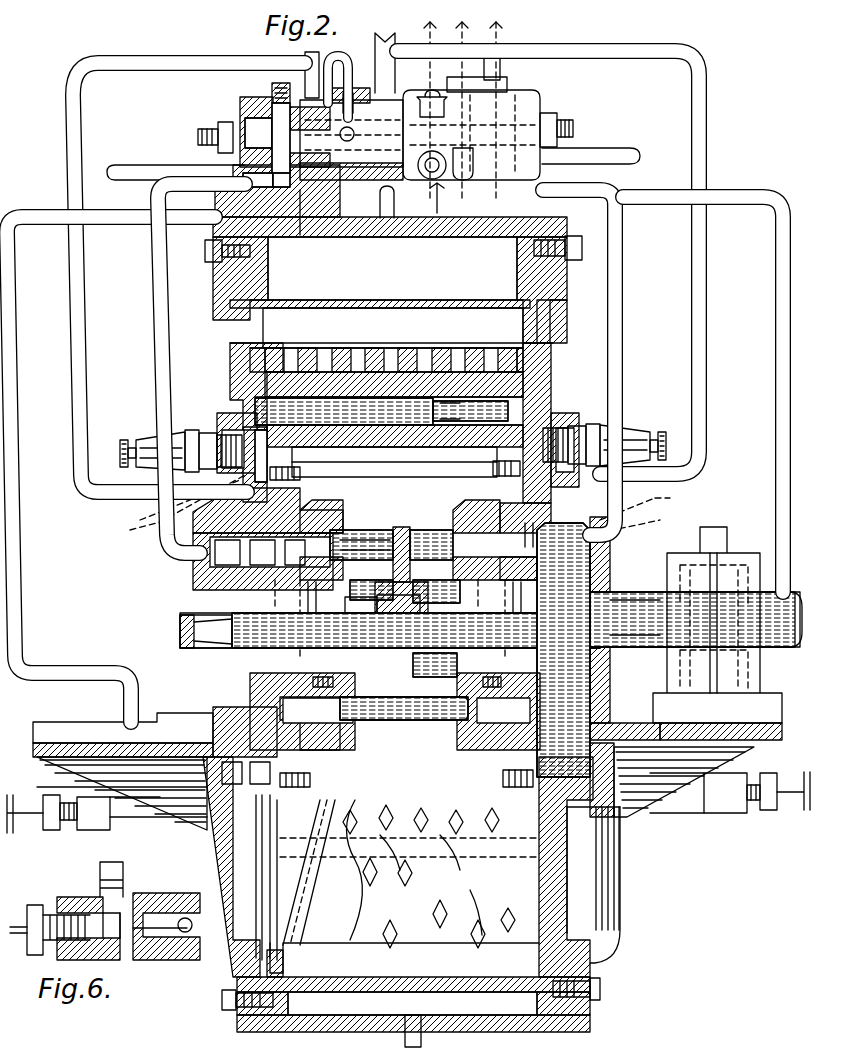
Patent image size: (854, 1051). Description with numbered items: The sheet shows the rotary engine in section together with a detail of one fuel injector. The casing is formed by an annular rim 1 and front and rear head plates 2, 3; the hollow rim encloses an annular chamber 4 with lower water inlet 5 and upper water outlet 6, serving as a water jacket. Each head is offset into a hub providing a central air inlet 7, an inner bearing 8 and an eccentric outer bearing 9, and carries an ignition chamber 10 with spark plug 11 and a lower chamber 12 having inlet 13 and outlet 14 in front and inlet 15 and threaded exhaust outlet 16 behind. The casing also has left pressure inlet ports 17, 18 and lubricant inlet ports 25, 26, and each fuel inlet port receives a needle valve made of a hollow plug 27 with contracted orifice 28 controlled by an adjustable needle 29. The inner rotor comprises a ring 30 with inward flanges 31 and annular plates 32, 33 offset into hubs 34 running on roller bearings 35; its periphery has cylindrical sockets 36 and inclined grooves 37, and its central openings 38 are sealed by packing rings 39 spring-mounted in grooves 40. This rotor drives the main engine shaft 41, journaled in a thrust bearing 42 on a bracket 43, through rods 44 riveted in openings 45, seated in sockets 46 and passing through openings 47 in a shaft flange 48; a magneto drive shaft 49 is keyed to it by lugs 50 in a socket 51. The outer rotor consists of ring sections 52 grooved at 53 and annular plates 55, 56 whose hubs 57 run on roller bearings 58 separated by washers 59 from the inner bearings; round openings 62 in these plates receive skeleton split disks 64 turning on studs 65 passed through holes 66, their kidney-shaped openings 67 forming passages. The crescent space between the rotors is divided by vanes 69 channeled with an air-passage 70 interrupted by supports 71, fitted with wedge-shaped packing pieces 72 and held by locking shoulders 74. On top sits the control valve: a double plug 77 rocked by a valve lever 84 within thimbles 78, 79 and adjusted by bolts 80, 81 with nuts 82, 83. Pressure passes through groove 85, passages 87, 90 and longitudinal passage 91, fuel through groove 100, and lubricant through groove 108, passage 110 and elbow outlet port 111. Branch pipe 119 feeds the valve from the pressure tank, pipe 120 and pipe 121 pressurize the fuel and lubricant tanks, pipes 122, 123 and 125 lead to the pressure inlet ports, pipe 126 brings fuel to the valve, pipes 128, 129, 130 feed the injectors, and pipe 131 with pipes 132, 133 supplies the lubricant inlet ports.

In FIG. 2, the annular rim 1 is at (252, 262).
In FIG. 2, the front head plate 2 is at (235, 358).
In FIG. 2, the rear head plate 3 is at (553, 350).
In FIG. 2, the annular chamber 4 is at (484, 1032).
In FIG. 2, the lower water inlet 5 is at (423, 525).
In FIG. 2, the upper water outlet 6 is at (380, 200).
In FIG. 2, the central air inlet 7 is at (602, 590).
In FIG. 2, the inner bearing 8 is at (262, 672).
In FIG. 2, the outer bearing 9 is at (235, 738).
In FIG. 2, the ignition chamber 10 is at (240, 420).
In FIG. 2, the spark plug 11 is at (150, 440).
In FIG. 2, the chamber 12 is at (238, 890).
In FIG. 2, the inlet 13 is at (225, 988).
In FIG. 2, the outlet 14 is at (262, 880).
In FIG. 2, the inlet 15 is at (560, 860).
In FIG. 2, the outlet 16 is at (600, 910).
In FIG. 2, the left pressure inlet port 17 is at (185, 504).
In FIG. 2, the left pressure inlet port 18 is at (637, 504).
In FIG. 2, the lubricant inlet port 25 is at (196, 576).
In FIG. 2, the lubricant inlet port 26 is at (612, 548).
In FIG. 2, the hollow plug 27 is at (108, 808).
In FIG. 6, the hollow plug 27 is at (145, 958).
In FIG. 6, the contracted orifice 28 is at (199, 945).
In FIG. 2, the adjustable needle 29 is at (36, 805).
In FIG. 6, the adjustable needle 29 is at (15, 927).
In FIG. 2, the ring 30 is at (420, 426).
In FIG. 2, the integral flanges 31 is at (395, 451).
In FIG. 2, the annular plate 32 is at (290, 506).
In FIG. 2, the annular plate 33 is at (530, 515).
In FIG. 2, the hubs 34 is at (352, 515).
In FIG. 2, the roller bearings 35 is at (380, 530).
In FIG. 2, the transverse cylindrical sockets 36 is at (320, 783).
In FIG. 2, the radial round-bottomed grooves 37 is at (288, 350).
In FIG. 2, the central openings 38 is at (390, 620).
In FIG. 2, the packing rings 39 is at (404, 670).
In FIG. 2, the grooves 40 is at (417, 567).
In FIG. 2, the main engine shaft 41 is at (657, 640).
In FIG. 2, the thrust bearing 42 is at (727, 562).
In FIG. 2, the bracket 43 is at (782, 735).
In FIG. 2, the rods 44 is at (378, 540).
In FIG. 2, the openings 45 is at (408, 565).
In FIG. 2, the sockets 46 is at (350, 565).
In FIG. 2, the openings 47 is at (410, 690).
In FIG. 2, the flange 48 is at (410, 563).
In FIG. 2, the magneto drive shaft 49 is at (180, 631).
In FIG. 2, the lugs 50 is at (377, 622).
In FIG. 2, the socket 51 is at (361, 605).
In FIG. 2, the ring sections 52 is at (372, 350).
In FIG. 2, the longitudinal grooves 53 is at (440, 350).
In FIG. 2, the annular plate 55 is at (242, 350).
In FIG. 2, the annular plate 56 is at (567, 312).
In FIG. 2, the hubs 57 is at (195, 548).
In FIG. 2, the roller bearings 58 is at (226, 568).
In FIG. 2, the washers 59 is at (537, 572).
In FIG. 2, the round openings 62 is at (255, 397).
In FIG. 2, the skeleton split disks 64 is at (255, 425).
In FIG. 2, the studs 65 is at (365, 426).
In FIG. 2, the holes 66 is at (452, 426).
In FIG. 2, the kidney-shaped openings 67 is at (300, 474).
In FIG. 2, the vanes 69 is at (308, 948).
In FIG. 2, the air-passage 70 is at (450, 945).
In FIG. 2, the supports 71 is at (493, 960).
In FIG. 2, the wedge-shaped packing pieces 72 is at (275, 848).
In FIG. 2, the locking shoulders 74 is at (309, 872).
In FIG. 2, the double plug 77 is at (380, 95).
In FIG. 2, the thimble 78 is at (250, 115).
In FIG. 2, the thimble 79 is at (480, 98).
In FIG. 2, the bolt 80 is at (245, 130).
In FIG. 2, the bolt 81 is at (574, 128).
In FIG. 2, the adjusting nut 82 is at (218, 135).
In FIG. 2, the adjusting nut 83 is at (552, 118).
In FIG. 2, the valve lever 84 is at (392, 40).
In FIG. 2, the transverse groove 85 is at (350, 95).
In FIG. 2, the connecting passage 87 is at (354, 134).
In FIG. 2, the connecting passage 90 is at (440, 152).
In FIG. 2, the longitudinal passage 91 is at (352, 52).
In FIG. 2, the transverse groove 100 is at (292, 191).
In FIG. 2, the circumferential groove 108 is at (275, 100).
In FIG. 2, the longitudinal passage 110 is at (300, 236).
In FIG. 2, the elbow outlet port 111 is at (245, 185).
In FIG. 2, the branch pipe 119 is at (612, 150).
In FIG. 2, the pipe 120 is at (183, 157).
In FIG. 2, the pipe 121 is at (427, 197).
In FIG. 2, the pipe 122 is at (215, 56).
In FIG. 2, the pipe 123 is at (697, 58).
In FIG. 2, the pipe 125 is at (455, 80).
In FIG. 2, the pipe 126 is at (313, 55).
In FIG. 2, the pipe 128 is at (470, 165).
In FIG. 2, the pipe 129 is at (24, 528).
In FIG. 6, the pipe 129 is at (124, 869).
In FIG. 2, the pipe 130 is at (770, 190).
In FIG. 2, the pipe 131 is at (495, 62).
In FIG. 2, the pipe 132 is at (166, 330).
In FIG. 2, the pipe 133 is at (625, 290).